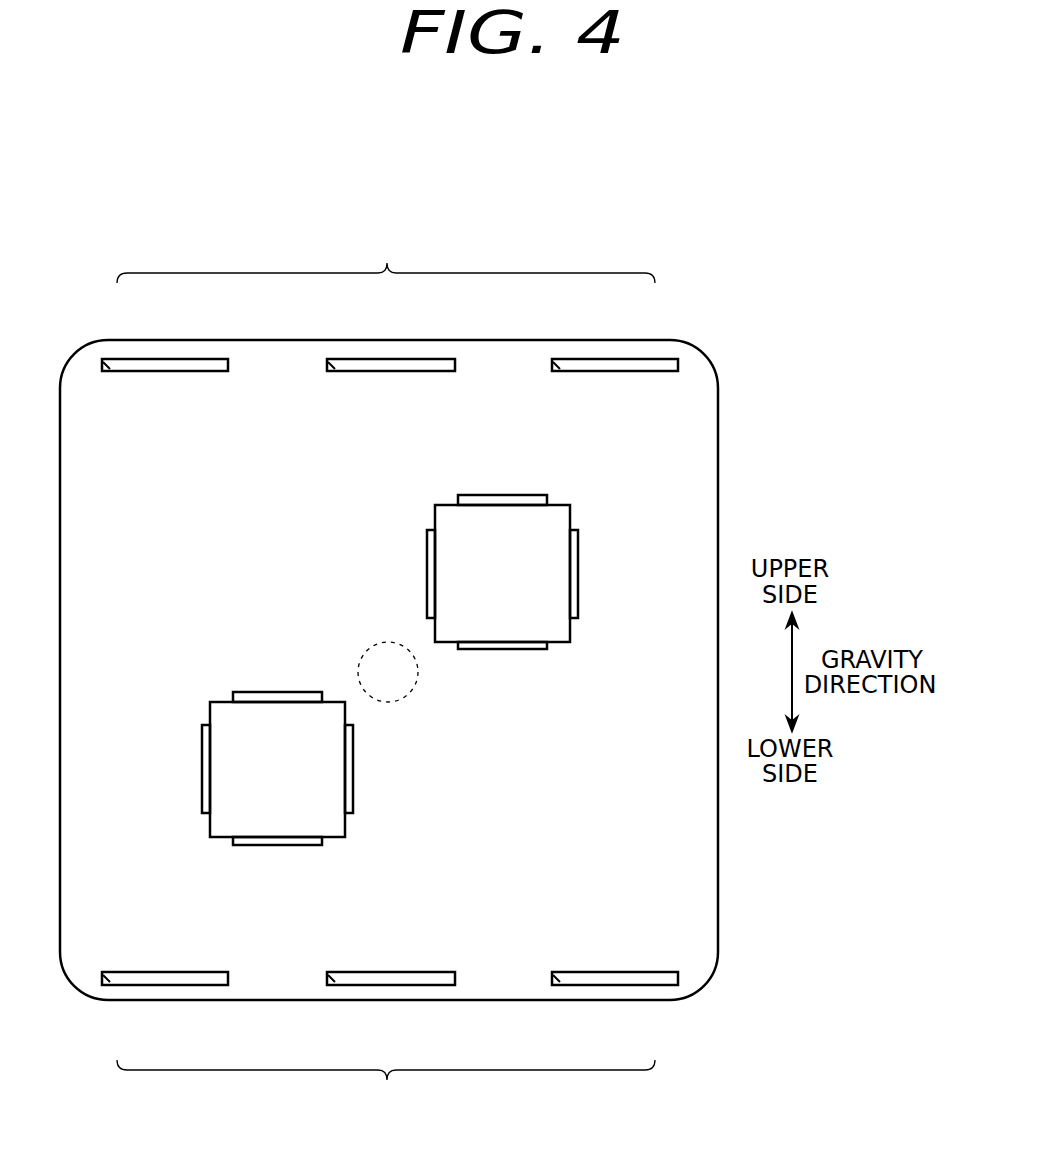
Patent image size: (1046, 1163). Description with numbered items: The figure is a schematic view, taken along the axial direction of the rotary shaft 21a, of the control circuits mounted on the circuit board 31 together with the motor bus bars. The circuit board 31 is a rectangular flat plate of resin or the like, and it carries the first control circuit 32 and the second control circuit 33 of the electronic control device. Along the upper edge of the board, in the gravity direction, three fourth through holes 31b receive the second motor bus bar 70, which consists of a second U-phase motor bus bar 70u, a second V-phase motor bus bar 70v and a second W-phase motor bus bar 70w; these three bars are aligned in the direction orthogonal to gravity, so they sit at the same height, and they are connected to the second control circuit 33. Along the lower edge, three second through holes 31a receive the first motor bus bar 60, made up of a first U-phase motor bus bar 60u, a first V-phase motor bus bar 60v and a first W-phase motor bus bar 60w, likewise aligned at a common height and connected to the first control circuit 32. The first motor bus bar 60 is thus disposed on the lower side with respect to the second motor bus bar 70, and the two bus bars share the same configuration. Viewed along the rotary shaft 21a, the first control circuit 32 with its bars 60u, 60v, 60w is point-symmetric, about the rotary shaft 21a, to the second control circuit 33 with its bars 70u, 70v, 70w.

The circuit board 31 is at (692, 413).
The second through hole 31a is at (142, 980).
The fourth through hole 31b is at (103, 362).
The first control circuit 32 is at (335, 767).
The second control circuit 33 is at (557, 570).
The rotary shaft 21a is at (420, 672).
The first motor bus bar 60 is at (386, 1090).
The first U-phase motor bus bar 60u is at (170, 980).
The first V-phase motor bus bar 60v is at (395, 980).
The first W-phase motor bus bar 60w is at (620, 980).
The second motor bus bar 70 is at (386, 256).
The second U-phase motor bus bar 70u is at (170, 363).
The second V-phase motor bus bar 70v is at (395, 363).
The second W-phase motor bus bar 70w is at (620, 363).